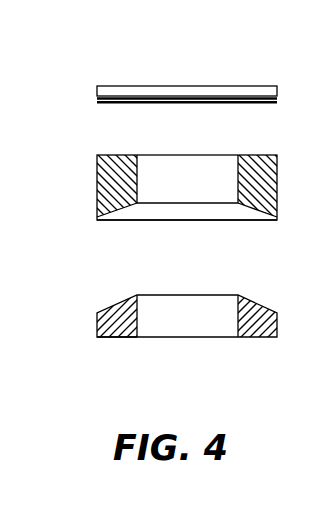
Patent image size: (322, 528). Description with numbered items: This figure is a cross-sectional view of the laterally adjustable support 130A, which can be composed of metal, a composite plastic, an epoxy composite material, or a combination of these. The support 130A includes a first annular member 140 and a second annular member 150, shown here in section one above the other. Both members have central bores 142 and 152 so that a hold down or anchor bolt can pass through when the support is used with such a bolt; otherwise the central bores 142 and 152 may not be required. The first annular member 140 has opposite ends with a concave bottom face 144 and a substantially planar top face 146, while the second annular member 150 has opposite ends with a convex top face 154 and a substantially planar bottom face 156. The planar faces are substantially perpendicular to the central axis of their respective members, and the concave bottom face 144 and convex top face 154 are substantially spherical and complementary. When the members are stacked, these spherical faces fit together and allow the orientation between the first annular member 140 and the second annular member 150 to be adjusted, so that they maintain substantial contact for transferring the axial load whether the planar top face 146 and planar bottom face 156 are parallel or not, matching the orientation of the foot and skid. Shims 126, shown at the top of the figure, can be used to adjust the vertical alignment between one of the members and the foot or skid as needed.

The laterally adjustable support 130A is at (83, 62).
The shims 126 is at (93, 90).
The first annular member 140 is at (95, 189).
The planar top face 146 is at (110, 155).
The concave bottom face 144 is at (110, 218).
The central bore 142 is at (240, 202).
The second annular member 150 is at (95, 323).
The convex top face 154 is at (110, 306).
The planar bottom face 156 is at (110, 338).
The central bore 152 is at (241, 329).